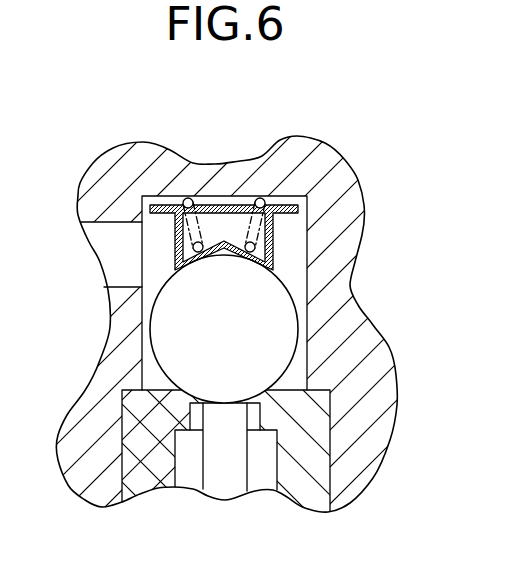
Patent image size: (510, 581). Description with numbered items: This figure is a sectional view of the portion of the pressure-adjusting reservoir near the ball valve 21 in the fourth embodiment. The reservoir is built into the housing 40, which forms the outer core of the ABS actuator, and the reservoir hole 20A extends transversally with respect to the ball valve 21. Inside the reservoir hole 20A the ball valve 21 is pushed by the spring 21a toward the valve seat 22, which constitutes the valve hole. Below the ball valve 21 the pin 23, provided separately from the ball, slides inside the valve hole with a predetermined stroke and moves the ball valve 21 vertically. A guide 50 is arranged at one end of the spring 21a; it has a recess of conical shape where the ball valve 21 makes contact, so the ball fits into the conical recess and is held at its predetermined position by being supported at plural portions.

The housing 40 is at (102, 378).
The reservoir hole 20A is at (110, 240).
The ball valve 21 is at (246, 204).
The spring 21a is at (189, 197).
The guide 50 is at (264, 246).
The valve seat 22 is at (180, 389).
The pin 23 is at (225, 489).